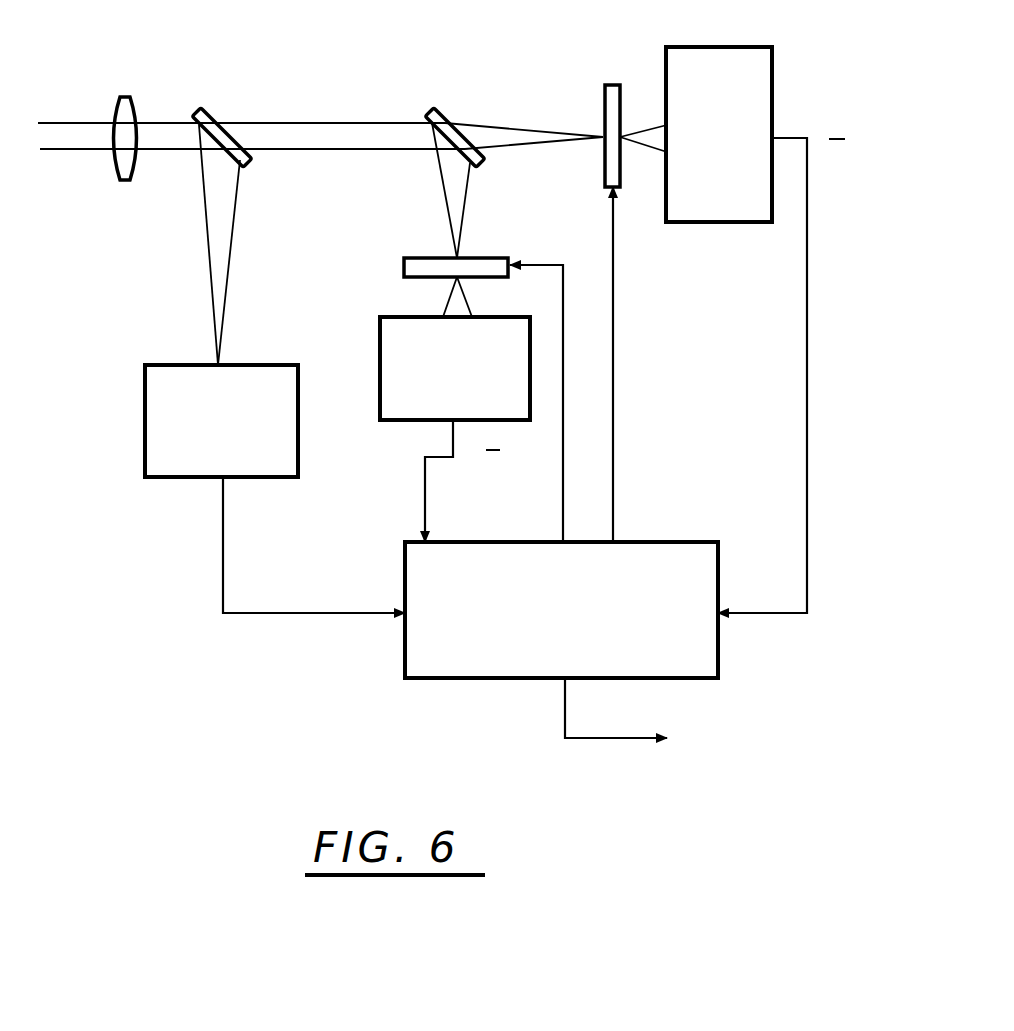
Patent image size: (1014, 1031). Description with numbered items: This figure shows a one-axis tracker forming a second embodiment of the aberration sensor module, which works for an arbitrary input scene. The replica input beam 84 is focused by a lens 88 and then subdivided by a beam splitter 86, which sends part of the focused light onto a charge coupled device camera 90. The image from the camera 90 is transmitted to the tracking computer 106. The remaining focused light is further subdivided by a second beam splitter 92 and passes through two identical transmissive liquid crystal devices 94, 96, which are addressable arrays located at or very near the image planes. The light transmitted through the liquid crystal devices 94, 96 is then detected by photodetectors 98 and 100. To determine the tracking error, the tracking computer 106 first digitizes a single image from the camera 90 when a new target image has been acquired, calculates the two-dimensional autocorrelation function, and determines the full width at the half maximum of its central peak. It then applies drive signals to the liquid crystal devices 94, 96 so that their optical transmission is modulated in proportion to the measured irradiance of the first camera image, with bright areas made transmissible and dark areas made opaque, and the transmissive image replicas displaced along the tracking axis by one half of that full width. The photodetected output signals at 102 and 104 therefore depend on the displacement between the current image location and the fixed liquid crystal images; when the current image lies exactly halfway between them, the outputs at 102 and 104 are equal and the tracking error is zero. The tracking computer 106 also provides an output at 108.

The replica input beam 84 is at (80, 123).
The beam splitter 86 is at (212, 112).
The lens 88 is at (140, 100).
The charge coupled device (CCD) camera 90 is at (145, 412).
The beam splitter 92 is at (442, 116).
The transmissive liquid crystal device (LCD) 94 is at (604, 92).
The transmissive liquid crystal device (LCD) 96 is at (420, 257).
The photodetector 98 is at (772, 67).
The photodetector 100 is at (380, 349).
The photodetected output signal V_t^+ 102 is at (809, 200).
The photodetected output signal V_t^- 104 is at (427, 500).
The tracking computer 106 is at (655, 541).
The output 108 is at (607, 738).